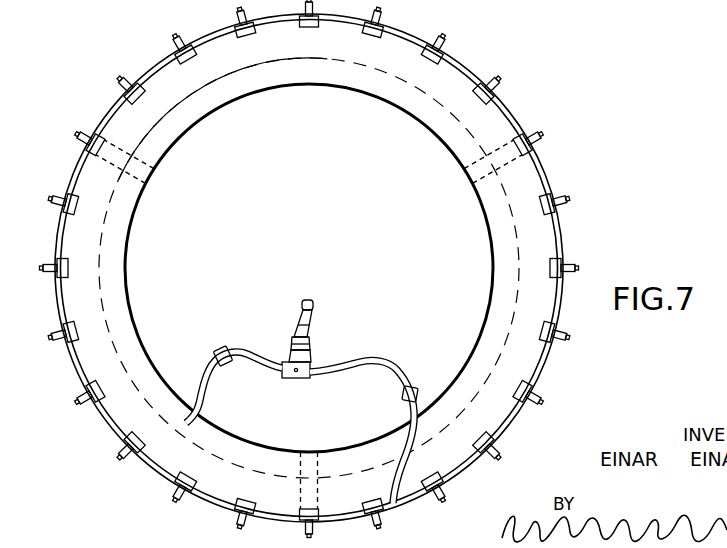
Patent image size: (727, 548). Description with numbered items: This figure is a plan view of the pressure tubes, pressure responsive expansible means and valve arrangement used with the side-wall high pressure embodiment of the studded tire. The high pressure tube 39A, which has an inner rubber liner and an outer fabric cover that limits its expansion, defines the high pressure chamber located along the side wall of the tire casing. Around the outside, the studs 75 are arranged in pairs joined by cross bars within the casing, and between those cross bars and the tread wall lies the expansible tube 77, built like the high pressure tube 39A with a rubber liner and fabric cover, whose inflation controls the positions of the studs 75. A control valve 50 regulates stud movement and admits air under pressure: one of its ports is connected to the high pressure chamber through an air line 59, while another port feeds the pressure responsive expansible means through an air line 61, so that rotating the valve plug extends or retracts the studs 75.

The studs 75 is at (538, 131).
The expansible tube 77 is at (553, 175).
The high pressure tube 39A is at (507, 253).
The control valve 50 is at (322, 350).
The air line 59 is at (228, 349).
The air line 61 is at (395, 368).